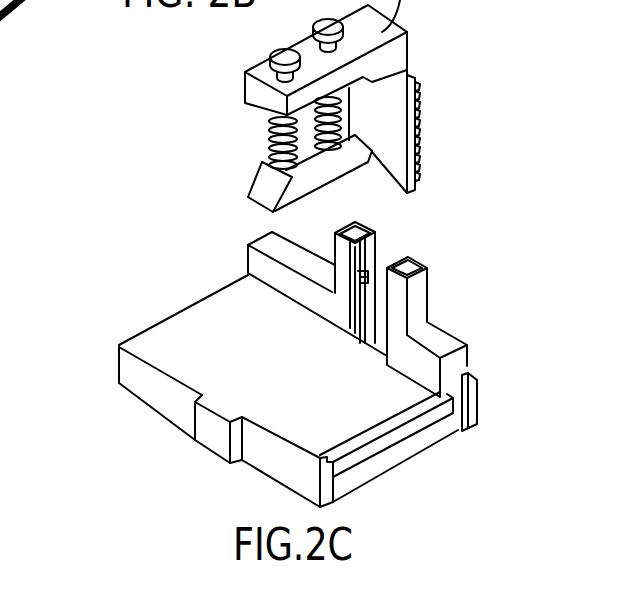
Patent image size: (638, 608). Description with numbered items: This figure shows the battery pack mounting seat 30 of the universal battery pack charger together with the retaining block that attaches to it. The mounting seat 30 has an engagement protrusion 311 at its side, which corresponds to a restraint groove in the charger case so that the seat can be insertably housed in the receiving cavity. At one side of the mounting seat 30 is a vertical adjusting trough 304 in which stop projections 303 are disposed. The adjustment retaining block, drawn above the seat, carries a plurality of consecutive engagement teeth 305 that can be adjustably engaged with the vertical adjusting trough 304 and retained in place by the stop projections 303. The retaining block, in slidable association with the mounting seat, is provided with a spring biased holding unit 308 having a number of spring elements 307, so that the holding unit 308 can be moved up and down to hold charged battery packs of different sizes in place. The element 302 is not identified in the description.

The battery pack mounting seat 30 is at (190, 322).
The clamp block 302 is at (326, 60).
The stop projections 303 is at (366, 270).
The vertical adjusting trough 304 is at (363, 248).
The engagement teeth 305 is at (420, 120).
The spring elements 307 is at (268, 136).
The spring biased holding unit 308 is at (257, 171).
The engagement protrusion 311 is at (200, 423).